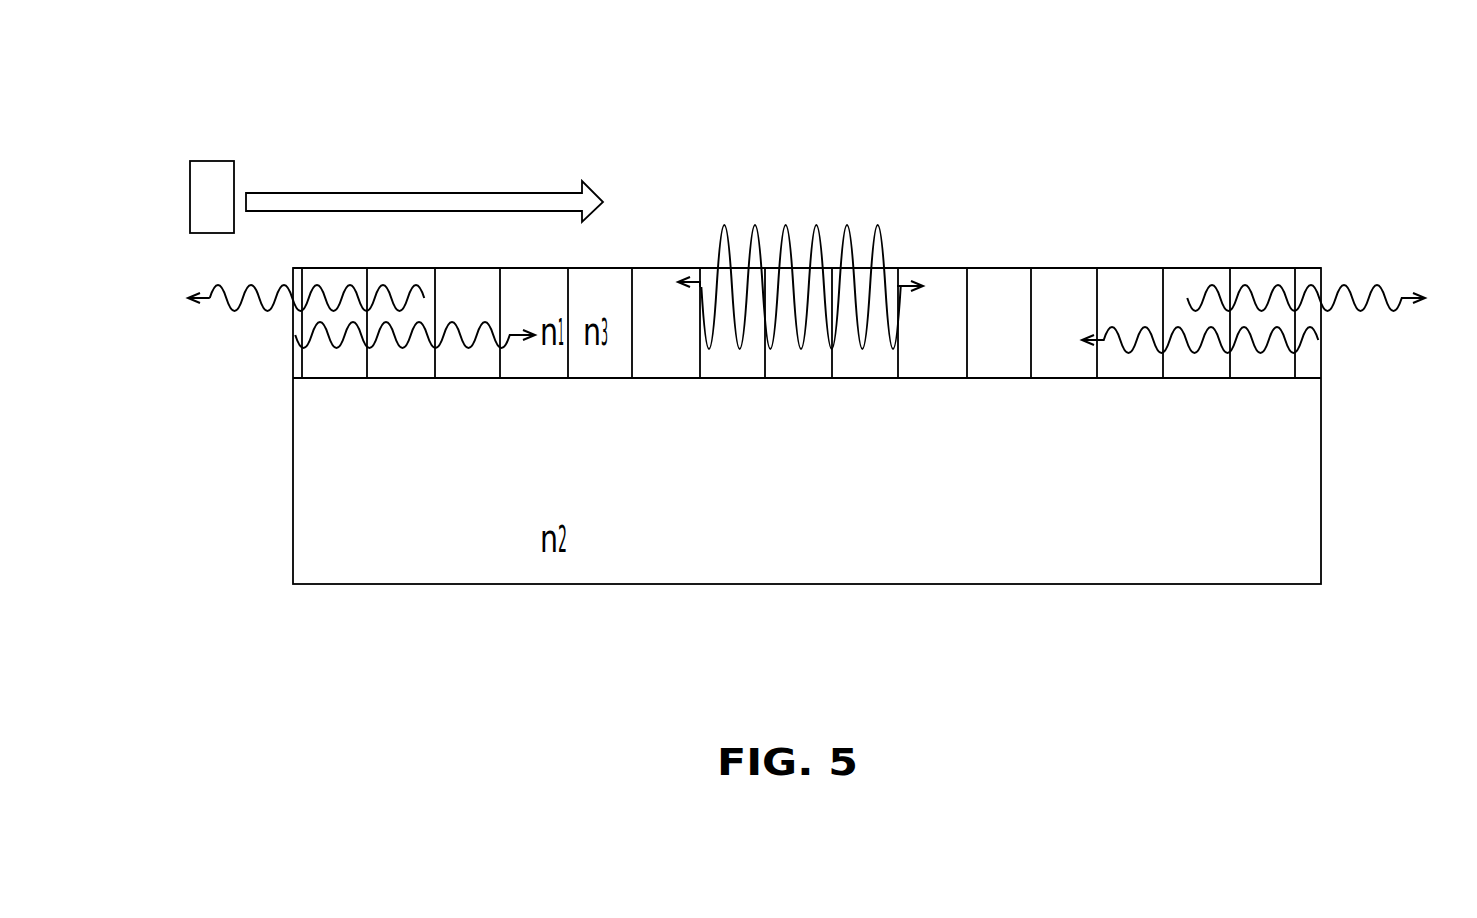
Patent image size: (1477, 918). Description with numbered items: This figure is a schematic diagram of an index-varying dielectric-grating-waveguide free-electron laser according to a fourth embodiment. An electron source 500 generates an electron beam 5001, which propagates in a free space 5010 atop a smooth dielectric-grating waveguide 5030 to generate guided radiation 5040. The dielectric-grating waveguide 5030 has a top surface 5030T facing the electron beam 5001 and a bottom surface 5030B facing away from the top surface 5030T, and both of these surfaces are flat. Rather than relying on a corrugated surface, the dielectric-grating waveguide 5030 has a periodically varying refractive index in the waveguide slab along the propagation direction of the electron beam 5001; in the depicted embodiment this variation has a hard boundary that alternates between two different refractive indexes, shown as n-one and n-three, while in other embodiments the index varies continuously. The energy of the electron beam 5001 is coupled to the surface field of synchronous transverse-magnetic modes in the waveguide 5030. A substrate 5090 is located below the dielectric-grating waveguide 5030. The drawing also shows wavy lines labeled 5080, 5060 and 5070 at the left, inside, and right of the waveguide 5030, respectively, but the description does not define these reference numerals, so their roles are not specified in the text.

The electron source 500 is at (207, 170).
The electron beam 5001 is at (428, 198).
The reflected light 5080 is at (235, 282).
The free space 5010 is at (817, 265).
The dielectric-grating waveguide 5030 is at (1052, 335).
The top surface 5030T is at (1250, 268).
The bottom surface 5030B is at (1195, 378).
The guided radiation 5040 is at (738, 352).
The guided light wave 5060 is at (357, 347).
The output light 5070 is at (1365, 273).
The substrate 5090 is at (913, 538).